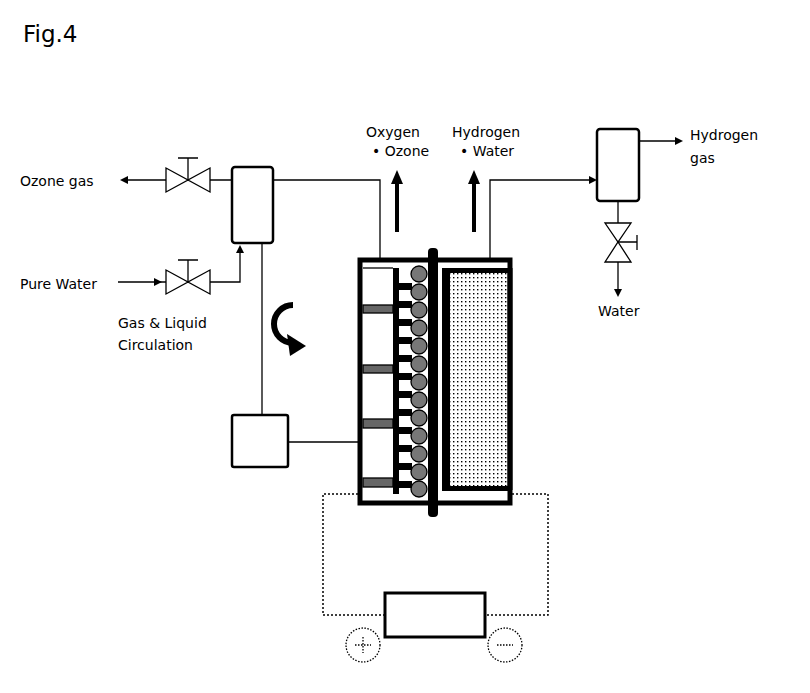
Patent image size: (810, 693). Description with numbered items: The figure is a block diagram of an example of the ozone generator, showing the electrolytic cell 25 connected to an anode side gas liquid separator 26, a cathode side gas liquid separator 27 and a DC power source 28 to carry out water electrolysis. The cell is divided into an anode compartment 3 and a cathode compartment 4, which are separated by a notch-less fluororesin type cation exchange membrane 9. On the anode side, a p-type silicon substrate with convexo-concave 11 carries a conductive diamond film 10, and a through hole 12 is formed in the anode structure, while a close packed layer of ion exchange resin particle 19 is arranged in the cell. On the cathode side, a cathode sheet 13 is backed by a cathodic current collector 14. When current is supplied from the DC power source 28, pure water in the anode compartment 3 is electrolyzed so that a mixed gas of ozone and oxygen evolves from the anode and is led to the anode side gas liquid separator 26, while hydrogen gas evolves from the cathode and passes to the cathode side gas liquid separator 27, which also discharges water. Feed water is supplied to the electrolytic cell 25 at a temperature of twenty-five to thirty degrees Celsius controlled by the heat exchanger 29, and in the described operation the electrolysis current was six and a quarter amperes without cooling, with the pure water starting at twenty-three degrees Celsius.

The anode compartment 3 is at (358, 262).
The cathode compartment 4 is at (515, 265).
The notch-less fluororesin type cation exchange membrane 9 is at (512, 448).
The conductive diamond film 10 is at (393, 403).
The p-type silicon substrate with convexo-concave 11 is at (358, 393).
The through hole 12 is at (358, 367).
The cathode sheet 13 is at (512, 324).
The cathodic current collector 14 is at (512, 370).
The close packed layer of ion exchange resin particle 19 is at (512, 477).
The electrolytic cell 25 is at (512, 420).
The anode side gas liquid separator 26 is at (252, 205).
The cathode side gas liquid separator 27 is at (618, 165).
The DC power source 28 is at (435, 615).
The heat exchanger 29 is at (295, 355).